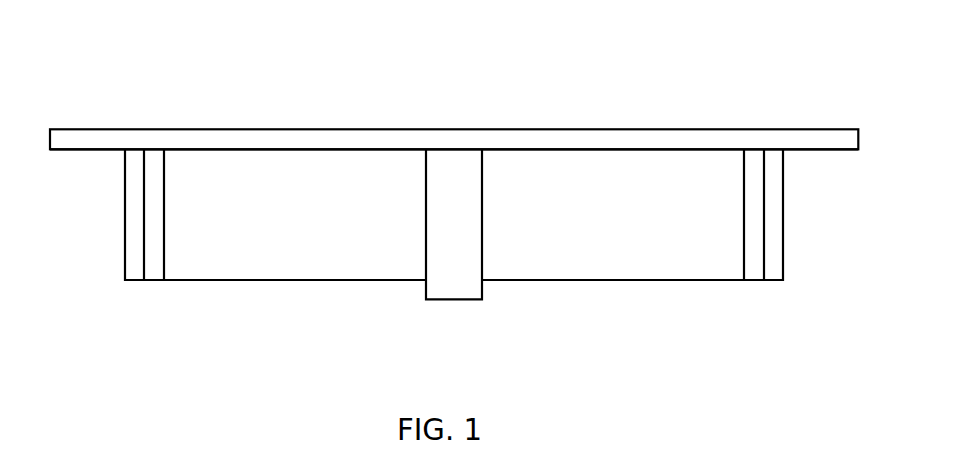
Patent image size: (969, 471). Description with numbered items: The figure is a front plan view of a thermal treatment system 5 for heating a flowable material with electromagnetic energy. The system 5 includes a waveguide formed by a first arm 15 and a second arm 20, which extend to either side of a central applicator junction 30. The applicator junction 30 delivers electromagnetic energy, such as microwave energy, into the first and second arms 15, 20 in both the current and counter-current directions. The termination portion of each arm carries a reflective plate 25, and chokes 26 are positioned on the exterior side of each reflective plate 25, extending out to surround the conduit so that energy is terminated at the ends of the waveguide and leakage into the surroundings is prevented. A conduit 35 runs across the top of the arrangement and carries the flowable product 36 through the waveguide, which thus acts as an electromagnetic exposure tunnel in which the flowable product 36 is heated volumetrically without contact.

The system 5 is at (584, 50).
The first arm 15 is at (630, 208).
The second arm 20 is at (274, 208).
The reflective plate 25 is at (152, 276).
The chokes 26 is at (133, 193).
The applicator junction 30 is at (452, 285).
The conduit 35 is at (378, 131).
The flowable product 36 is at (253, 142).